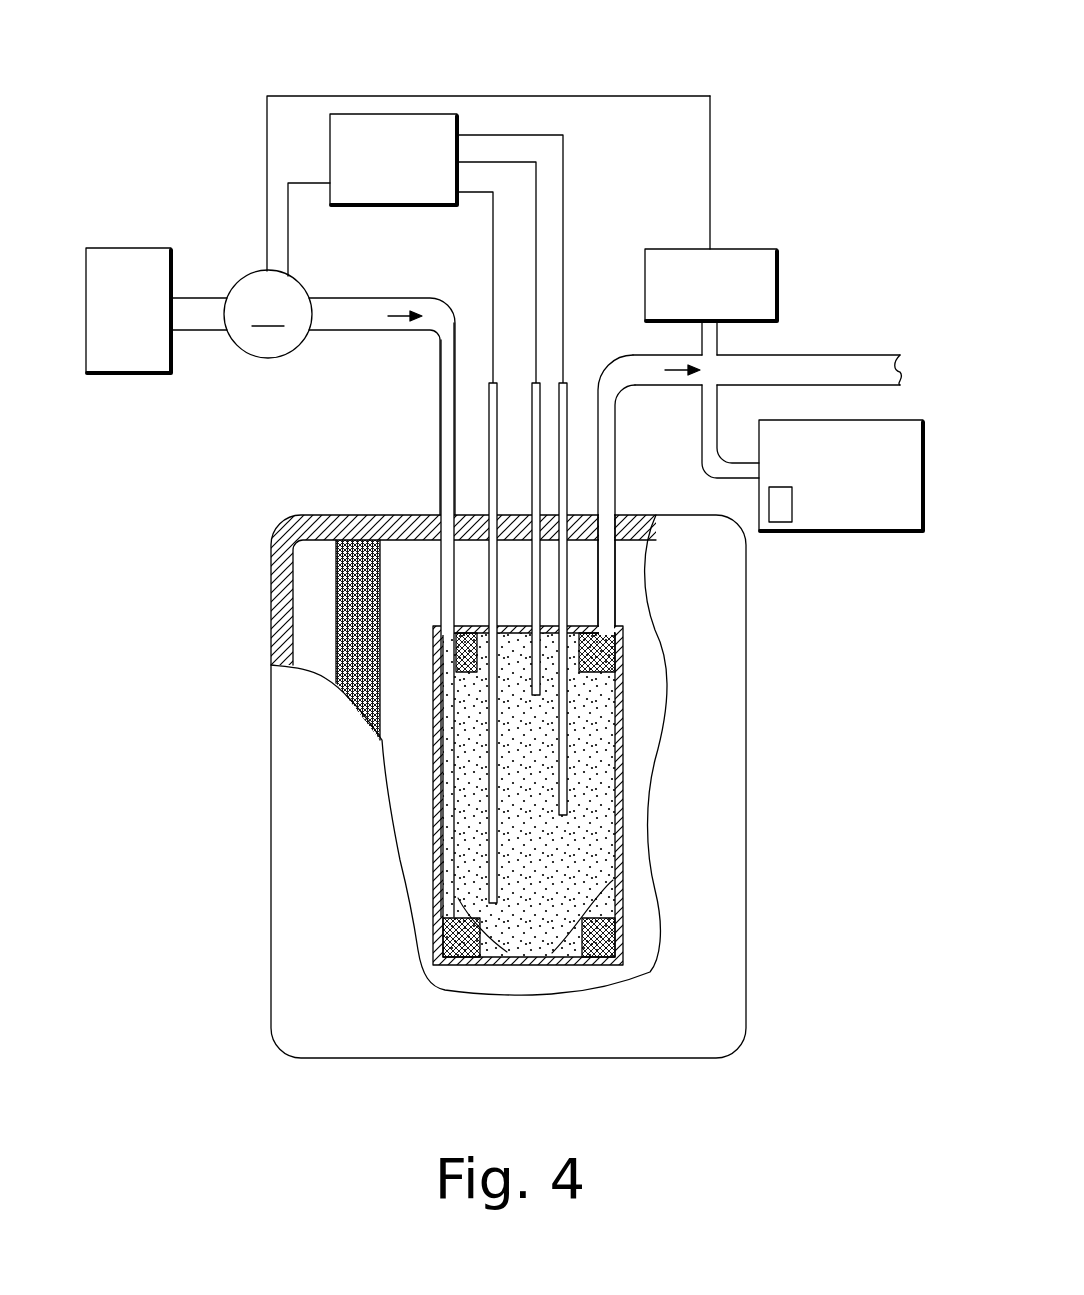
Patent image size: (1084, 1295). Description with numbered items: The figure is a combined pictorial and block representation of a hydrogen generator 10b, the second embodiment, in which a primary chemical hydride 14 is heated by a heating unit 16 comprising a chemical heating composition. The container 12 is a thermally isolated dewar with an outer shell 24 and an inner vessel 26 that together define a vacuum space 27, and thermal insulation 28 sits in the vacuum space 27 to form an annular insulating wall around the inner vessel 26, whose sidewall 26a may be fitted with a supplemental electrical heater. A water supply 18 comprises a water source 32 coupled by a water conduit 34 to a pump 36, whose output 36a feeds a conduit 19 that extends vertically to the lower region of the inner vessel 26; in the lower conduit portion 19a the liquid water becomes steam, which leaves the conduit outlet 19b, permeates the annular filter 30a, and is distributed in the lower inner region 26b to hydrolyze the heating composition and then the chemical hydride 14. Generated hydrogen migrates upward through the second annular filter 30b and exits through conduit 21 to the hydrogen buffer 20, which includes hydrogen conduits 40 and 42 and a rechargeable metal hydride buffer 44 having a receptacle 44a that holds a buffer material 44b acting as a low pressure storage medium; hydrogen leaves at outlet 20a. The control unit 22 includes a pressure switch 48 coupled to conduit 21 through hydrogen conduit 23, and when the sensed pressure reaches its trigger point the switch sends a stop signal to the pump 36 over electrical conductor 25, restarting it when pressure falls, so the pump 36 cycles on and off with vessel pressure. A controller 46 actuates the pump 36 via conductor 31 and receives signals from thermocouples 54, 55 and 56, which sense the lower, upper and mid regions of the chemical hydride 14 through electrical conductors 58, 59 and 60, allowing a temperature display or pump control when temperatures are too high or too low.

The hydrogen generator 10b is at (702, 87).
The container 12 is at (191, 667).
The primary chemical hydride 14 is at (532, 792).
The heating unit 16 is at (376, 971).
The water supply 18 is at (195, 200).
The conduit 19 is at (440, 418).
The lower conduit portion 19a is at (453, 748).
The conduit outlet 19b is at (440, 905).
The hydrogen buffer 20 is at (808, 270).
The outlet 20a is at (903, 368).
The conduit 21 is at (605, 355).
The control unit 22 is at (484, 72).
The hydrogen conduit 23 is at (718, 333).
The outer shell 24 is at (312, 977).
The electrical conductor 25 is at (712, 130).
The inner vessel 26 is at (428, 827).
The sidewall 26a is at (438, 773).
The lower inner region 26b is at (532, 927).
The vacuum space 27 is at (365, 568).
The thermal insulation 28 is at (336, 592).
The annular filter 30a is at (597, 958).
The annular filter 30b is at (617, 645).
The conductor 31 is at (300, 181).
The water source 32 is at (128, 310).
The water conduit 34 is at (202, 334).
The pump 36 is at (268, 314).
The pump output 36a is at (302, 294).
The hydrogen conduit 40 is at (704, 415).
The hydrogen conduit 42 is at (806, 355).
The rechargeable metal hydride buffer 44 is at (841, 475).
The receptacle 44a is at (846, 531).
The buffer material 44b is at (781, 512).
The controller 46 is at (393, 159).
The pressure switch 48 is at (740, 249).
The thermocouple 54 is at (489, 400).
The thermocouple 55 is at (532, 400).
The thermocouple 56 is at (567, 400).
The electrical conductor 58 is at (492, 201).
The electrical conductor 59 is at (534, 249).
The electrical conductor 60 is at (564, 205).